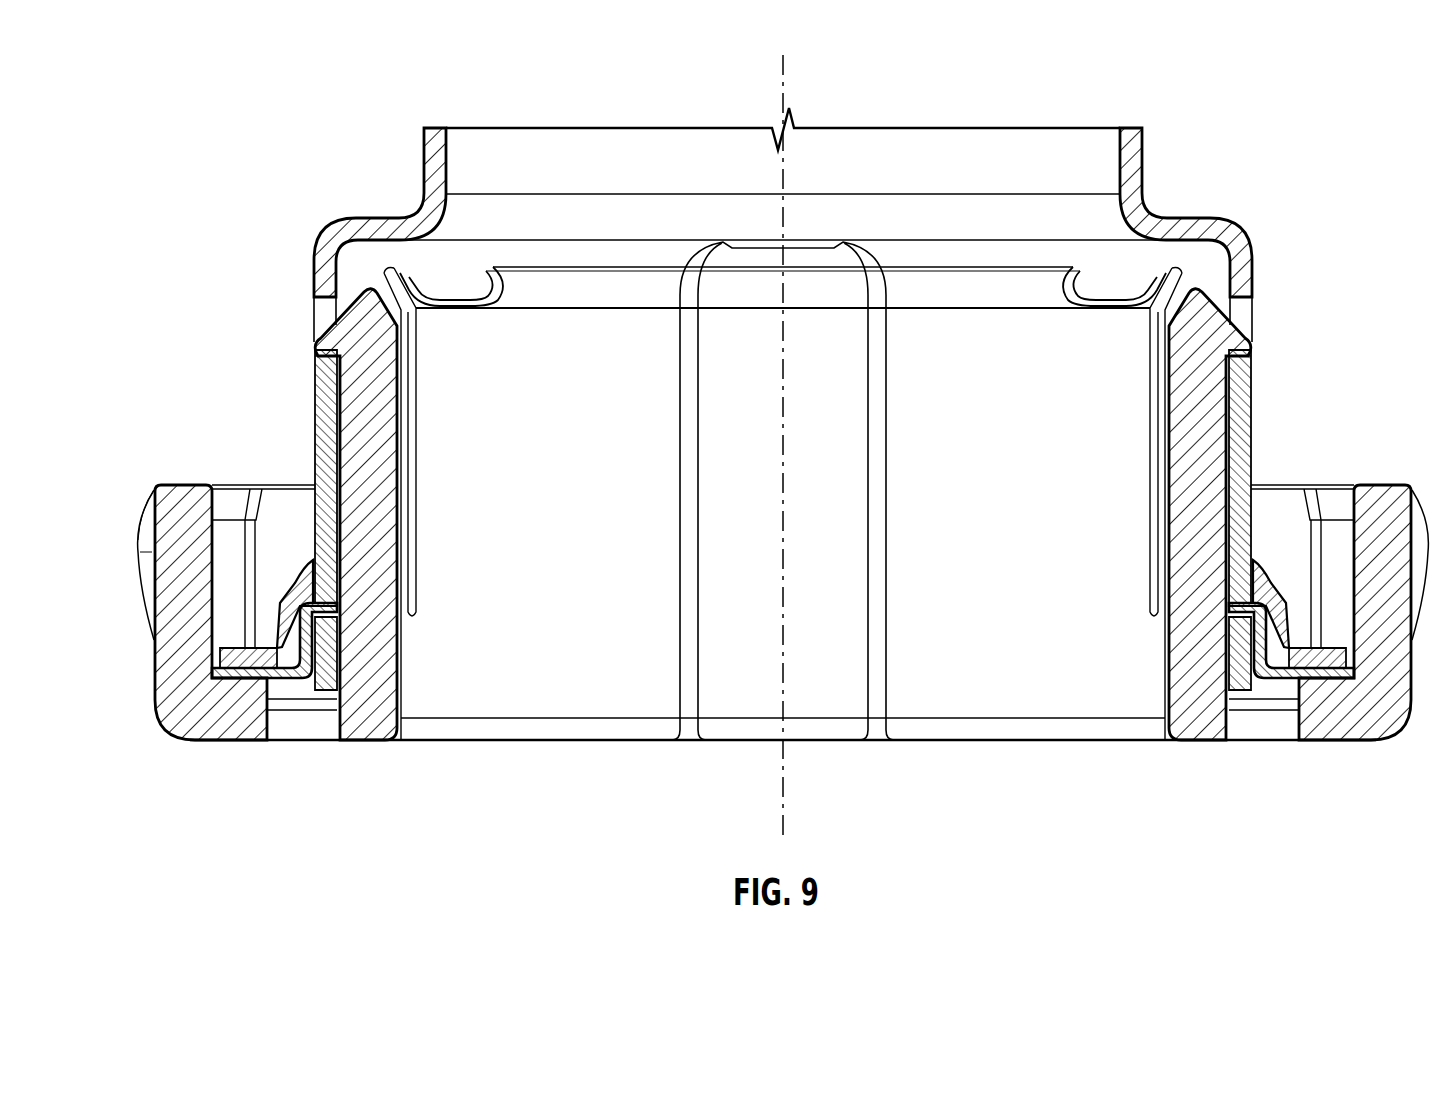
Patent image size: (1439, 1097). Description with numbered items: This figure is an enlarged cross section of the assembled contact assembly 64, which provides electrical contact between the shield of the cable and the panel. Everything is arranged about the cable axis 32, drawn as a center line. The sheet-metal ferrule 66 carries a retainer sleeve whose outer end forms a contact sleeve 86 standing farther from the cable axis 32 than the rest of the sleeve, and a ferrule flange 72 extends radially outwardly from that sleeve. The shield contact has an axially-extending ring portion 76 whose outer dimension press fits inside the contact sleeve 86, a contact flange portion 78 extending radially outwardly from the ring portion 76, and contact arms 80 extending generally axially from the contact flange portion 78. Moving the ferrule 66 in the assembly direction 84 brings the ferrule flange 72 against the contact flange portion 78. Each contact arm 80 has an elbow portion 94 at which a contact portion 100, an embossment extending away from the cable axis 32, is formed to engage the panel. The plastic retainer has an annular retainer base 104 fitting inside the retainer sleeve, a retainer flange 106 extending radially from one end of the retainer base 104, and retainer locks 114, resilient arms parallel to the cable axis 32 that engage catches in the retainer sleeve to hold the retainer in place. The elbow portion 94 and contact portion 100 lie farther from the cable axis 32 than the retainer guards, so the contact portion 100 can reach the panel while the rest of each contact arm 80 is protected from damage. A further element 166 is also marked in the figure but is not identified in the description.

The cable axis 32 is at (784, 778).
The contact assembly 64 is at (228, 83).
The ferrule 66 is at (428, 182).
The ferrule flange 72 is at (238, 650).
The ring portion 76 is at (410, 600).
The contact flange portion 78 is at (262, 680).
The contact arm 80 is at (149, 600).
The assembly direction 84 is at (553, 100).
The contact sleeve 86 is at (280, 604).
The elbow portion 94 is at (143, 561).
The contact portion 100 is at (141, 545).
The retainer base 104 is at (990, 295).
The retainer flange 106 is at (1345, 742).
The retainer lock 114 is at (385, 400).
The retaining ring 166 is at (325, 353).